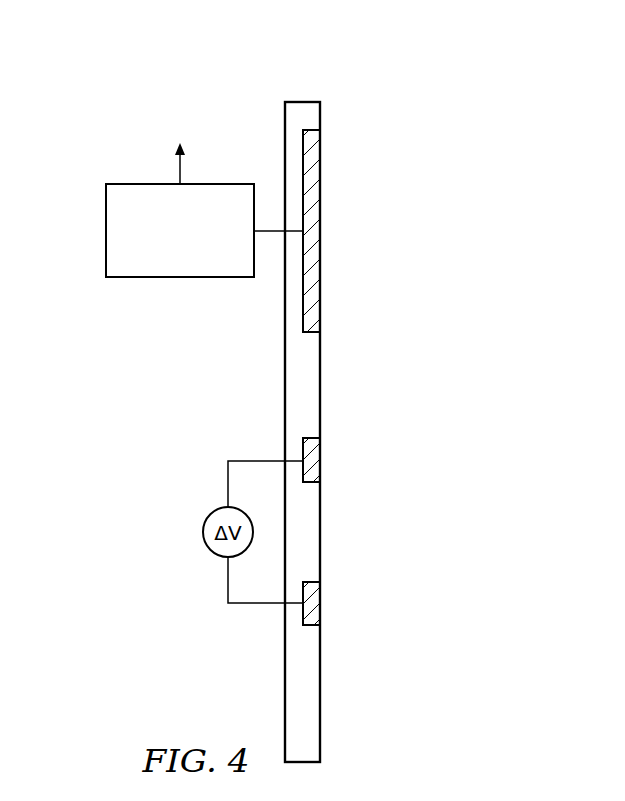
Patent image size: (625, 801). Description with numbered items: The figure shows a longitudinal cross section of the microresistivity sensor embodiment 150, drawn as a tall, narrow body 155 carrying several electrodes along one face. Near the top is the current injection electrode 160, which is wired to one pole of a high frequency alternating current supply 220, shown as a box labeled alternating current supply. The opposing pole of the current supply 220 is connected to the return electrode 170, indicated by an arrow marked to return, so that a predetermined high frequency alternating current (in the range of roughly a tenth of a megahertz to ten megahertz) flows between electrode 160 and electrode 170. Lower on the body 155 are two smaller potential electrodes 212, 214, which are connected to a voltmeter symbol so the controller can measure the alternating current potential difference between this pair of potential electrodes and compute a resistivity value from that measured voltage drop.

The sensor embodiment 150 is at (285, 390).
The substrate / body 155 is at (285, 385).
The current injection electrode 160 is at (315, 210).
The return electrode 170 is at (179, 136).
The first sensing electrode 212 is at (315, 460).
The second sensing electrode 214 is at (316, 604).
The high frequency alternating current supply 220 is at (106, 215).